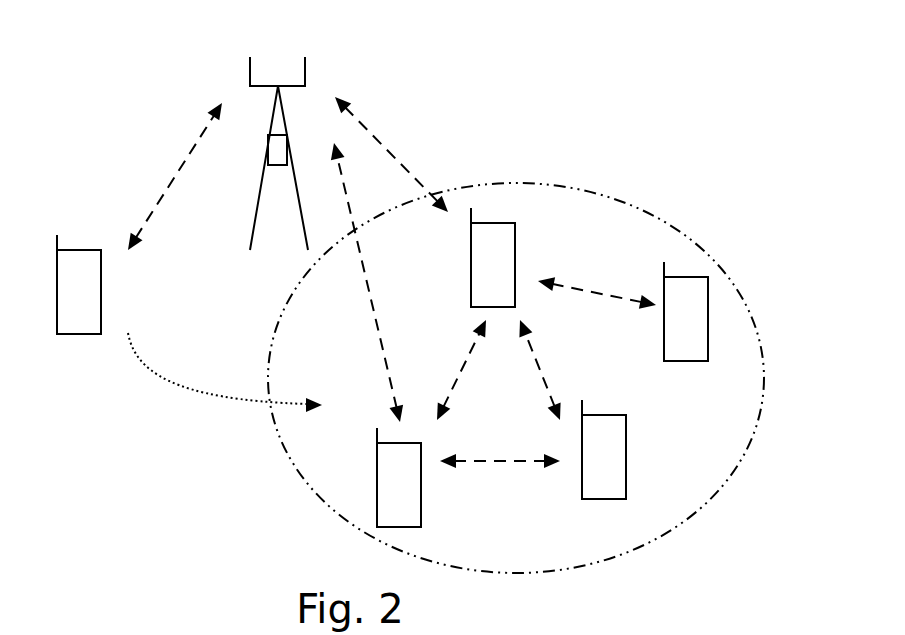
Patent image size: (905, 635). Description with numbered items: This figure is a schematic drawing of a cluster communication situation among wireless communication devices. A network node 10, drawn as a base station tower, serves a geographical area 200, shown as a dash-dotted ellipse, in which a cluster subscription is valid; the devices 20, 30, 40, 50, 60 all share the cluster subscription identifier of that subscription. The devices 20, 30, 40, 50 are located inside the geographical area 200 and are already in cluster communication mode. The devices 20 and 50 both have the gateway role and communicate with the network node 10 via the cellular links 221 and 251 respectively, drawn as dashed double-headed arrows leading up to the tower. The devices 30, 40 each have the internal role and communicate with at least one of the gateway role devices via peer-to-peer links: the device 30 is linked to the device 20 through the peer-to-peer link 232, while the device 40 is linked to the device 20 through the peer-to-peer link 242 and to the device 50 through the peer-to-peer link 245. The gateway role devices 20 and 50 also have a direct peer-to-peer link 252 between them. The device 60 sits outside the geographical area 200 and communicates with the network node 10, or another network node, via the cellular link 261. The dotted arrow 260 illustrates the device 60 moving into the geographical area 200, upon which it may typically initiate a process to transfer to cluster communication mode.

The network node 10 is at (284, 149).
The device 20 is at (493, 257).
The device 30 is at (686, 311).
The device 40 is at (604, 449).
The device 50 is at (399, 477).
The device 60 is at (79, 284).
The geographical area 200 is at (672, 224).
The cellular link 221 is at (392, 154).
The peer-to-peer link 232 is at (597, 286).
The peer-to-peer link 242 is at (554, 370).
The peer-to-peer link 245 is at (500, 475).
The cellular link 251 is at (361, 282).
The peer-to-peer link 252 is at (452, 370).
The arrow 260 is at (225, 372).
The cellular link 261 is at (175, 176).